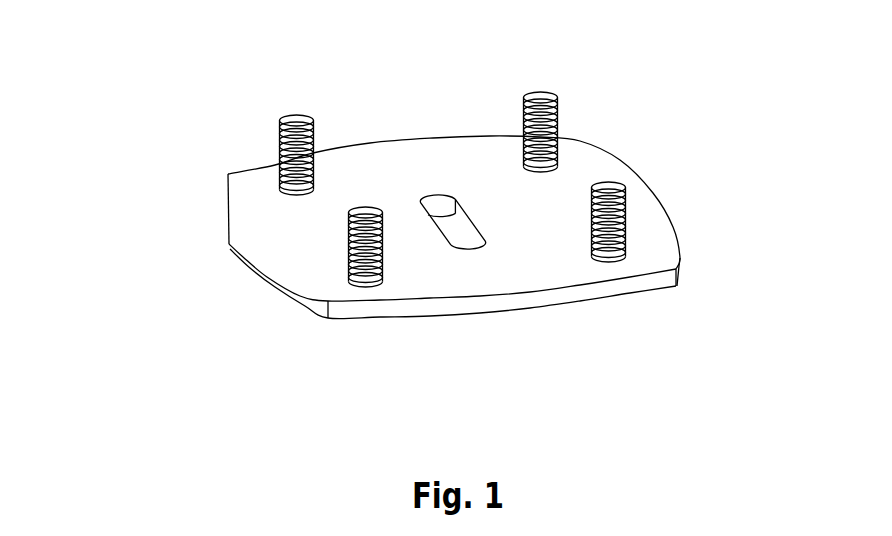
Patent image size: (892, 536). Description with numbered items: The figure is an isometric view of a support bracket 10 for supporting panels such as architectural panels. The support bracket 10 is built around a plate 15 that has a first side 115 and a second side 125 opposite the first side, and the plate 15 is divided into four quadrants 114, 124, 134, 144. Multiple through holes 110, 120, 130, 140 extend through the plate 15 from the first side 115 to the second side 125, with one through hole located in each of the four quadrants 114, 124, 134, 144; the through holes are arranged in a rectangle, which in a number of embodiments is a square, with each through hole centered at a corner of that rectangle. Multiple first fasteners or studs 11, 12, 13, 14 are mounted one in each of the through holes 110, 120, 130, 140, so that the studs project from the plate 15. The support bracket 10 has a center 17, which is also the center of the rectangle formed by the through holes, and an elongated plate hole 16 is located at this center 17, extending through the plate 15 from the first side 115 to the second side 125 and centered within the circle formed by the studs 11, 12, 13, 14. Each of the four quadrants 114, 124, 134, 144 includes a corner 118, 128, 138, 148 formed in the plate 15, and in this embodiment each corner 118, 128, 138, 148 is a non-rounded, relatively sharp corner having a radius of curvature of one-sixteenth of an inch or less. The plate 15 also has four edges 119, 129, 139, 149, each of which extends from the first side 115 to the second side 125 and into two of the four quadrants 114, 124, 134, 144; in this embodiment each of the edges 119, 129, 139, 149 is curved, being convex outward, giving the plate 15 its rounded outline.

The support bracket 10 is at (371, 227).
The first fastener or stud 11 is at (235, 112).
The first fastener or stud 12 is at (600, 101).
The first fastener or stud 13 is at (222, 258).
The first fastener or stud 14 is at (700, 205).
The plate 15 is at (703, 137).
The elongated plate hole 16 is at (549, 315).
The center 17 is at (348, 317).
The through hole 110 is at (141, 101).
The quadrant 114 is at (150, 157).
The first side 115 is at (312, 105).
The corner 118 is at (166, 130).
The edge 119 is at (385, 84).
The through hole 120 is at (475, 87).
The quadrant 124 is at (696, 114).
The second side 125 is at (393, 377).
The corner 128 is at (698, 84).
The edge 129 is at (145, 203).
The through hole 130 is at (197, 318).
The quadrant 134 is at (196, 344).
The corner 138 is at (188, 375).
The edge 139 is at (495, 367).
The through hole 140 is at (722, 250).
The quadrant 144 is at (734, 347).
The corner 148 is at (746, 327).
The edge 149 is at (741, 202).